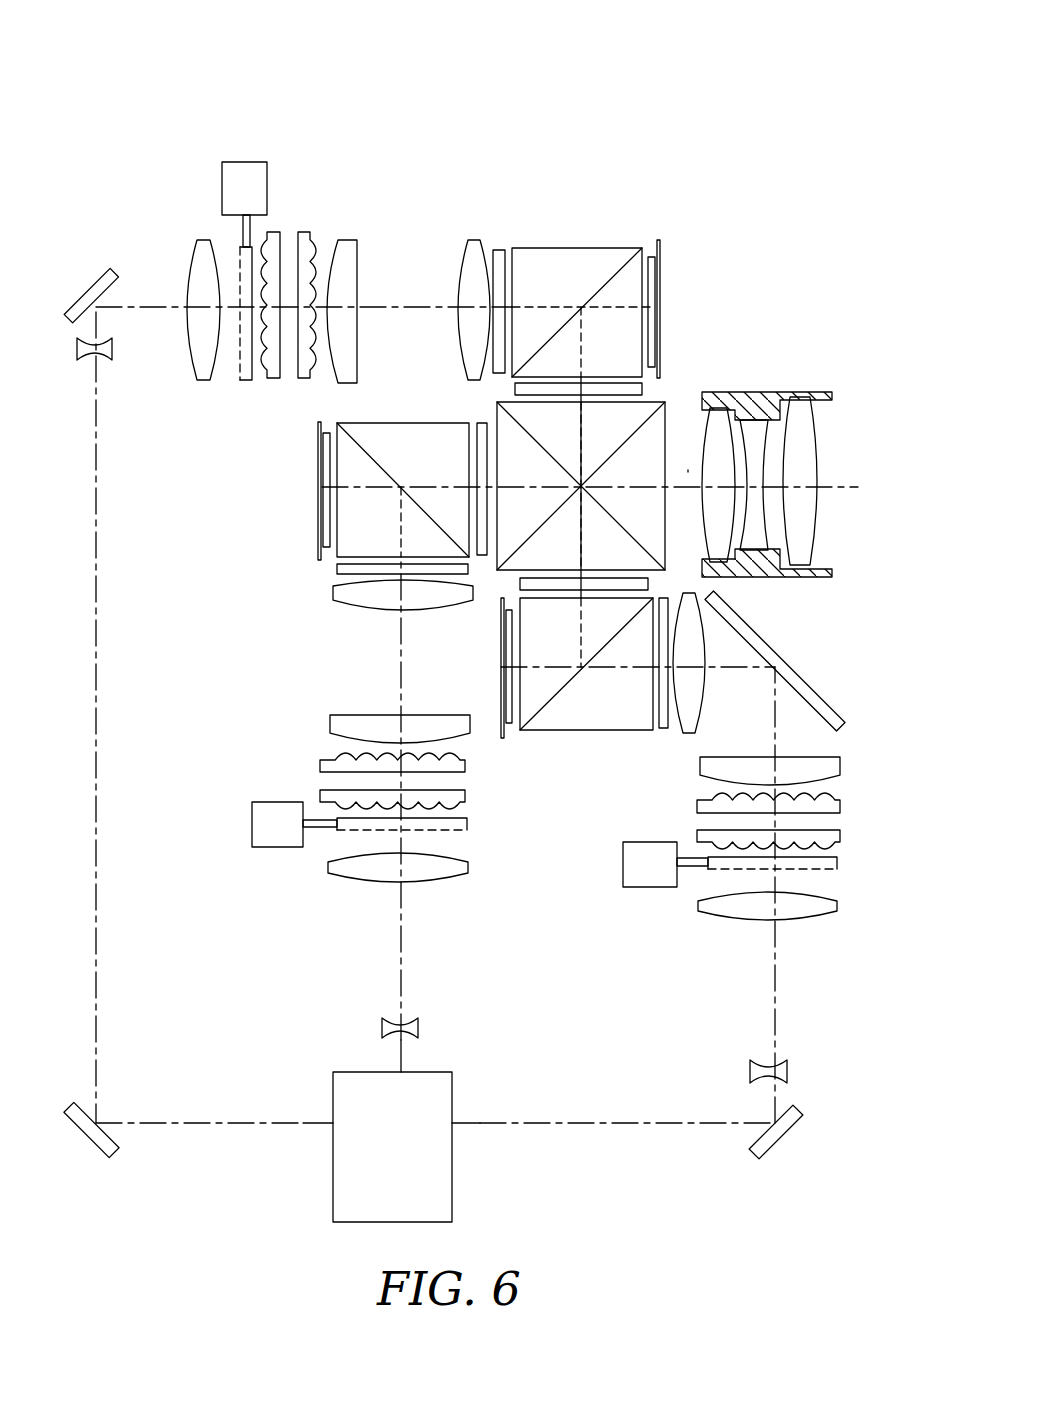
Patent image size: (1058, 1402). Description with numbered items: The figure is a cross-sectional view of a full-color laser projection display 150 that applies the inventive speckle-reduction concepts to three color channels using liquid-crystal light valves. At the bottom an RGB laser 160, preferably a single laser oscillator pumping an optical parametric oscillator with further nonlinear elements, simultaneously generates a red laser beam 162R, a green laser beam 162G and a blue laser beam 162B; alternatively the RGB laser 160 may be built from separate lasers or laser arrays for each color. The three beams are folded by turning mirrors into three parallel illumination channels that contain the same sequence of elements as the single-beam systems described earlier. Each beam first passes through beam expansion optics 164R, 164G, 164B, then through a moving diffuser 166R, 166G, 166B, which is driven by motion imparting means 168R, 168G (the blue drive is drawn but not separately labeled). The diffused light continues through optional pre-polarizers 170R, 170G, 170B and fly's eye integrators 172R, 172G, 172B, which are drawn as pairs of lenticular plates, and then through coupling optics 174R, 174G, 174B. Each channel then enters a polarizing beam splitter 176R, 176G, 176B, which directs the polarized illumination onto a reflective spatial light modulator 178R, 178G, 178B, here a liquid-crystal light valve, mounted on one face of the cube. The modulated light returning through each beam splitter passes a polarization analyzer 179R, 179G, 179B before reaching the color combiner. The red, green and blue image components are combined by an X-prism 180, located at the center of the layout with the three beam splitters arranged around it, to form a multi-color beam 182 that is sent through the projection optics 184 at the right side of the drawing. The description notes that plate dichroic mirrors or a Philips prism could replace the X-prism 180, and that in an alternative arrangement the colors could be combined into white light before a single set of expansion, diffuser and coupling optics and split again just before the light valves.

The full-color laser projection display 150 is at (657, 114).
The RGB laser 160 is at (447, 1157).
The red laser beam 162R is at (260, 1125).
The green laser beam 162G is at (357, 1082).
The blue laser beam 162B is at (635, 1088).
The beam expansion optics 164R is at (190, 366).
The beam expansion optics 164G is at (419, 1030).
The beam expansion optics 164B is at (752, 1058).
The moving diffuser 166R is at (245, 381).
The moving diffuser 166G is at (347, 829).
The moving diffuser 166B is at (838, 862).
The motion imparting means 168R is at (222, 183).
The motion imparting means 168G is at (252, 826).
The pre-polarizer 170R is at (500, 250).
The pre-polarizer 170G is at (337, 571).
The pre-polarizer 170B is at (663, 730).
The fly's eye integrator 172R is at (312, 232).
The fly's eye integrator 172G is at (320, 795).
The fly's eye integrator 172B is at (833, 807).
The coupling optics 174R is at (459, 262).
The coupling optics 174G is at (357, 602).
The coupling optics 174B is at (720, 772).
The polarizing beam splitter 176R is at (583, 312).
The polarizing beam splitter 176G is at (435, 460).
The polarizing beam splitter 176B is at (630, 721).
The spatial light modulator 178R is at (661, 268).
The spatial light modulator 178G is at (318, 467).
The spatial light modulator 178B is at (502, 625).
The polarization analyzer 179R is at (645, 391).
The polarization analyzer 179G is at (483, 423).
The polarization analyzer 179B is at (652, 582).
The X-prism 180 is at (575, 433).
The multi-color beam 182 is at (688, 472).
The projection optics 184 is at (795, 392).